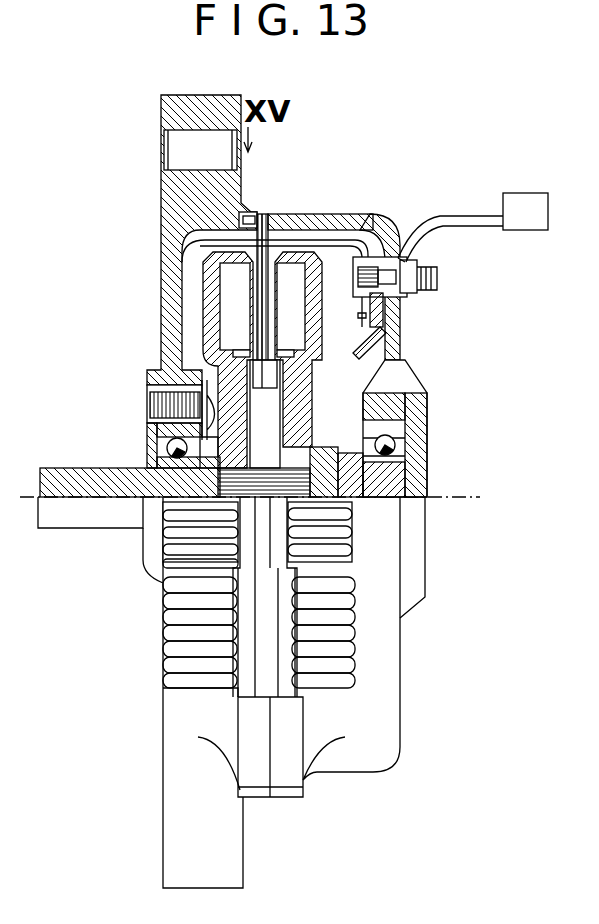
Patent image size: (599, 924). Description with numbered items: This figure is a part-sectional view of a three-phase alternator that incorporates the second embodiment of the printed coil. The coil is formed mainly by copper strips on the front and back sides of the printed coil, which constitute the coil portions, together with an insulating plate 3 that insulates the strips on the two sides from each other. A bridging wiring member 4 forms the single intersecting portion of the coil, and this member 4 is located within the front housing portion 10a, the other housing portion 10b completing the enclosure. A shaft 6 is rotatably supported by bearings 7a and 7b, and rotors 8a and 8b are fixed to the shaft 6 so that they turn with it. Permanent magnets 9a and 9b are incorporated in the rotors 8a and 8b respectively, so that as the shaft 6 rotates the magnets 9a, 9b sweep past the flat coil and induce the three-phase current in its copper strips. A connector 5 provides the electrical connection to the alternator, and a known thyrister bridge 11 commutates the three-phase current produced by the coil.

The front housing portion 10a is at (178, 198).
The housing portion 10b is at (378, 226).
The insulating plate 3 is at (270, 216).
The bridging wiring member 4 is at (257, 218).
The connector 5 is at (525, 193).
The shaft 6 is at (62, 483).
The bearing 7a is at (170, 450).
The bearing 7b is at (395, 446).
The rotor 8a is at (213, 320).
The rotor 8b is at (303, 412).
The permanent magnet 9a is at (228, 290).
The permanent magnet 9b is at (295, 335).
The thyrister bridge 11 is at (370, 342).